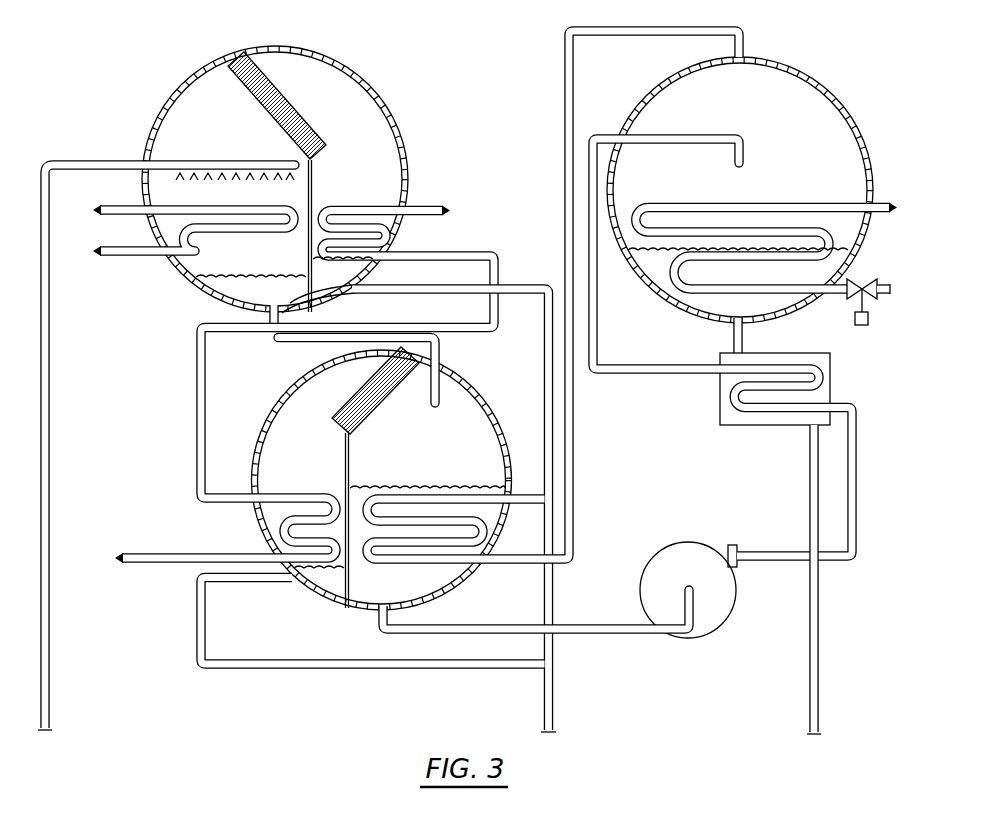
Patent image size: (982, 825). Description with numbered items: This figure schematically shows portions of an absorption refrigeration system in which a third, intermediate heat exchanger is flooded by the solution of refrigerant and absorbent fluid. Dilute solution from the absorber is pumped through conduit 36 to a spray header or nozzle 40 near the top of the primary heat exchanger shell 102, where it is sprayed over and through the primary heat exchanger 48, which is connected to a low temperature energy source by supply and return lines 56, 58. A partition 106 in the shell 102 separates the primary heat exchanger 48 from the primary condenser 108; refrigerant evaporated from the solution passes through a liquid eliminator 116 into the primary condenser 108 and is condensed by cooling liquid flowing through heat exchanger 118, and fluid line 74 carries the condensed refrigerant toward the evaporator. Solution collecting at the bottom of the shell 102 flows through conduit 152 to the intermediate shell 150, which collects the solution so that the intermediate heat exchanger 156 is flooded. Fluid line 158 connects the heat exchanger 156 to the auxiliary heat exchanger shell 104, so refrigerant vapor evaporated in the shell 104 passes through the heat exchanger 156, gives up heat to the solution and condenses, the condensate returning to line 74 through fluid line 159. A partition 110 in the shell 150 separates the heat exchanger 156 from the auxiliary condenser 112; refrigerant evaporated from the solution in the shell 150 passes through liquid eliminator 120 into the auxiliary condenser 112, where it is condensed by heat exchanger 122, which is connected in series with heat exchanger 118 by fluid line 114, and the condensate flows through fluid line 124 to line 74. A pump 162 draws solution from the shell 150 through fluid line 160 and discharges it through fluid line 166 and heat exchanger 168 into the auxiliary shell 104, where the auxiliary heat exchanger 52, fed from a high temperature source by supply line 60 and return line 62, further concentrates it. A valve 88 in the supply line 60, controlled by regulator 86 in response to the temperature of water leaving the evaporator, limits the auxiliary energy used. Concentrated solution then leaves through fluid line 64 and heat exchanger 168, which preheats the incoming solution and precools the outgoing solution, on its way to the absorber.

The conduit 36 is at (52, 465).
The spray header or nozzle 40 is at (252, 160).
The primary heat exchanger 48 is at (208, 298).
The auxiliary heat exchanger 52 is at (765, 200).
The fluid supply line 56 is at (122, 258).
The fluid return line 58 is at (118, 205).
The supply line 60 is at (826, 298).
The return line 62 is at (888, 200).
The fluid line 64 is at (808, 508).
The fluid line 74 is at (520, 282).
The regulator 86 is at (855, 325).
The valve 88 is at (870, 300).
The primary heat exchanger shell 102 is at (207, 68).
The auxiliary heat exchanger shell 104 is at (805, 68).
The partition 106 is at (313, 172).
The primary condenser 108 is at (351, 211).
The partition 110 is at (353, 492).
The auxiliary condenser 112 is at (309, 520).
The fluid line 114 is at (452, 321).
The liquid eliminator 116 is at (280, 88).
The heat exchanger 118 is at (357, 204).
The liquid eliminator 120 is at (287, 397).
The heat exchanger 122 is at (280, 530).
The fluid line 124 is at (197, 626).
The intermediate shell or vessel 150 is at (460, 372).
The conduit 152 is at (297, 348).
The intermediate heat exchanger 156 is at (430, 566).
The fluid line 158 is at (577, 507).
The fluid line 159 is at (527, 493).
The fluid line 160 is at (470, 637).
The pump 162 is at (660, 555).
The fluid line 166 is at (862, 545).
The heat exchanger 168 is at (765, 427).